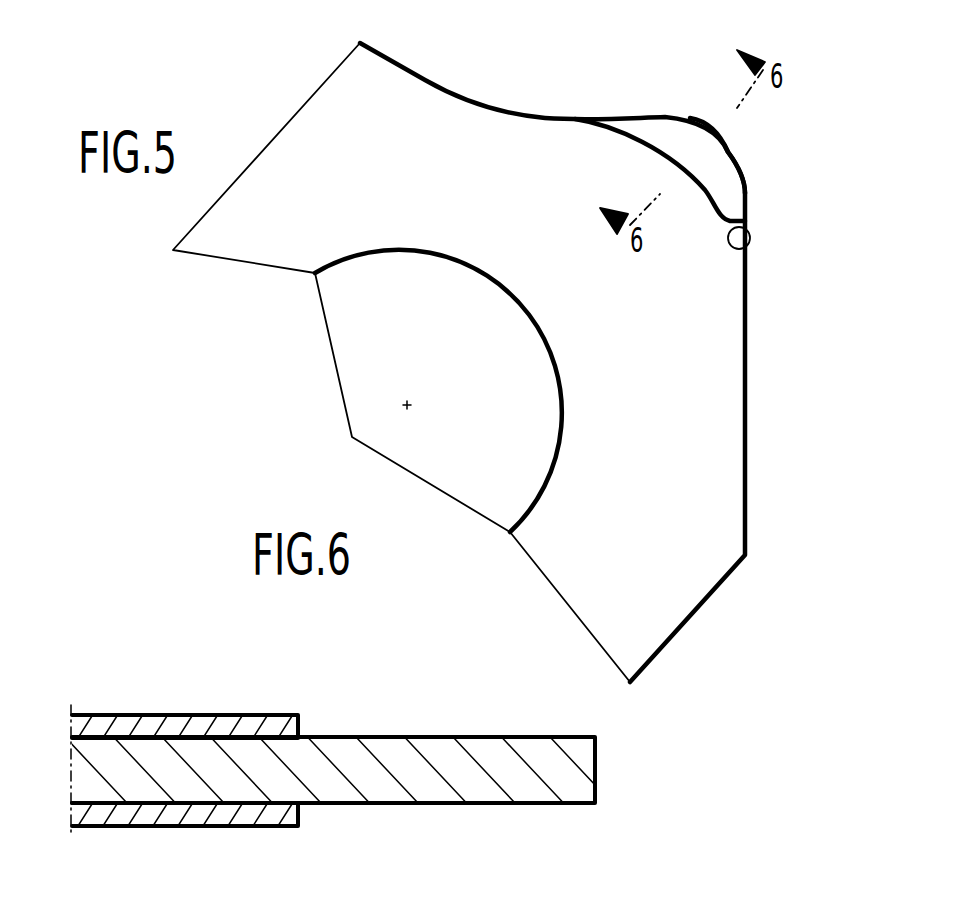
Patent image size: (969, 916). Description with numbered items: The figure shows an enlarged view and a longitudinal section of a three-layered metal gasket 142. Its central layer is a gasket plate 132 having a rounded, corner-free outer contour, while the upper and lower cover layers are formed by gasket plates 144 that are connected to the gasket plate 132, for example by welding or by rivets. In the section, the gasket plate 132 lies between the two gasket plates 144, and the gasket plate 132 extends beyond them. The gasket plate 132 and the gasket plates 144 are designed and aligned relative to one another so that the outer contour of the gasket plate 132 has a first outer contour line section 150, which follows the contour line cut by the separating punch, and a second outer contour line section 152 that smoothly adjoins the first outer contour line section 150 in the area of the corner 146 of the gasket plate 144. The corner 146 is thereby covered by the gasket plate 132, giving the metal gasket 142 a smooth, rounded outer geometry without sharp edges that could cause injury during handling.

In FIG. 5, the gasket plate 132 is at (662, 137).
In FIG. 6, the gasket plate 132 is at (480, 753).
In FIG. 5, the three-layered metal gasket 142 is at (315, 80).
In FIG. 6, the three-layered metal gasket 142 is at (165, 715).
In FIG. 5, the gasket plate 144 is at (445, 135).
In FIG. 6, the gasket plate 144 is at (270, 725).
In FIG. 5, the corner 146 is at (745, 250).
In FIG. 5, the first outer contour line section 150 is at (745, 385).
In FIG. 5, the second outer contour line section 152 is at (730, 148).